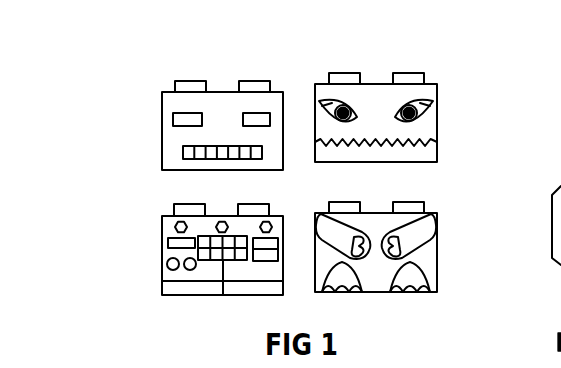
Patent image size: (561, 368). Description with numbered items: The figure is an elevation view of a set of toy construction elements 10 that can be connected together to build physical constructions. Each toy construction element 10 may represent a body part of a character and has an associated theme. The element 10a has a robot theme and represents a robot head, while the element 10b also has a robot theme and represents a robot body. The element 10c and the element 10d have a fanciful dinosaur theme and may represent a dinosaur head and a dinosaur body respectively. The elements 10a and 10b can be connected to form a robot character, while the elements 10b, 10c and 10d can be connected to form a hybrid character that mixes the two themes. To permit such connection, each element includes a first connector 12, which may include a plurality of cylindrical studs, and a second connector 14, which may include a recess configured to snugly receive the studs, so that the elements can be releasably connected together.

The toy construction element 10 is at (290, 154).
The robot head element 10a is at (161, 123).
The robot body element 10b is at (161, 255).
The dinosaur head element 10c is at (431, 96).
The dinosaur body element 10d is at (437, 257).
The first connector 12 is at (378, 65).
The second connector 14 is at (383, 171).